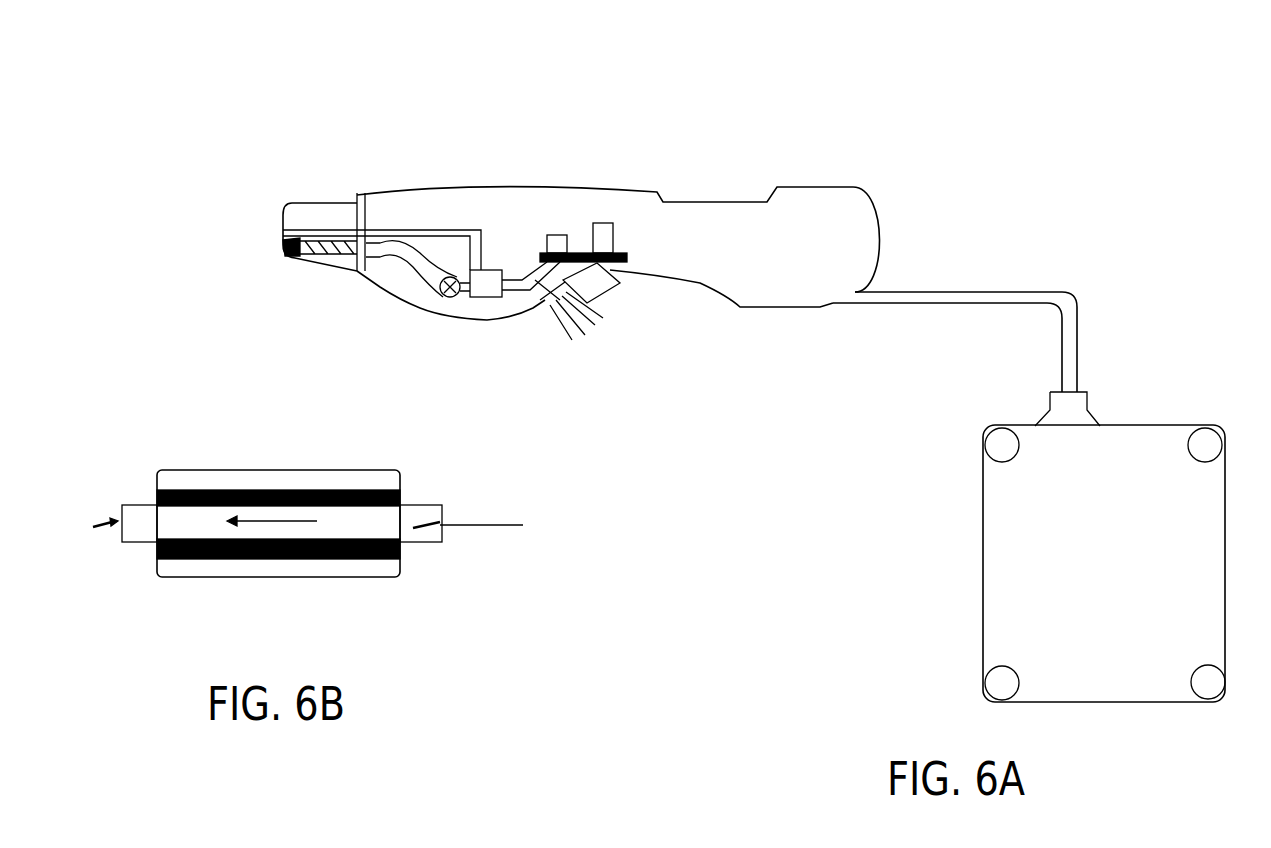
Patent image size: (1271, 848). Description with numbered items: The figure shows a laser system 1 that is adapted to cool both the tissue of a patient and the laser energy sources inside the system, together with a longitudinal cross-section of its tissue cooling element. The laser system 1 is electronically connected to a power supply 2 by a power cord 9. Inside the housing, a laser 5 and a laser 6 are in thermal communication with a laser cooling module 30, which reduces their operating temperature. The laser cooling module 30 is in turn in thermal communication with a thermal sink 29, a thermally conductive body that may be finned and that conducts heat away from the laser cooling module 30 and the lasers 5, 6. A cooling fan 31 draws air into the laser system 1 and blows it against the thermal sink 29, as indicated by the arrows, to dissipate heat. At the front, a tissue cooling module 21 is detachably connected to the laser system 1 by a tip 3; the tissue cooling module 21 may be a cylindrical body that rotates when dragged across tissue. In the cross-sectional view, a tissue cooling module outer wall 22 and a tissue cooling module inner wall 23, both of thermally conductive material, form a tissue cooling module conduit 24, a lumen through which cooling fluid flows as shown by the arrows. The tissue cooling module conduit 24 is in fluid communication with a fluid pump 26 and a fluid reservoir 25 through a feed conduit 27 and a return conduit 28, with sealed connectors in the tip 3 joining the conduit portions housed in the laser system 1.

In FIG. 6A, the laser system 1 is at (543, 197).
In FIG. 6A, the power supply 2 is at (1050, 522).
In FIG. 6A, the tip 3 is at (311, 215).
In FIG. 6A, the laser 5 is at (558, 237).
In FIG. 6A, the laser 6 is at (613, 230).
In FIG. 6A, the power cord 9 is at (960, 293).
In FIG. 6A, the tissue cooling module 21 is at (290, 250).
In FIG. 6B, the tissue cooling module 21 is at (360, 575).
In FIG. 6B, the tissue cooling module outer wall 22 is at (217, 570).
In FIG. 6B, the tissue cooling module inner wall 23 is at (202, 507).
In FIG. 6B, the tissue cooling module conduit 24 is at (383, 523).
In FIG. 6A, the fluid reservoir 25 is at (500, 297).
In FIG. 6A, the fluid pump 26 is at (447, 298).
In FIG. 6A, the feed conduit 27 is at (392, 258).
In FIG. 6A, the return conduit 28 is at (433, 230).
In FIG. 6A, the thermal sink 29 is at (577, 268).
In FIG. 6A, the laser cooling module 30 is at (620, 257).
In FIG. 6A, the cooling fan 31 is at (546, 300).